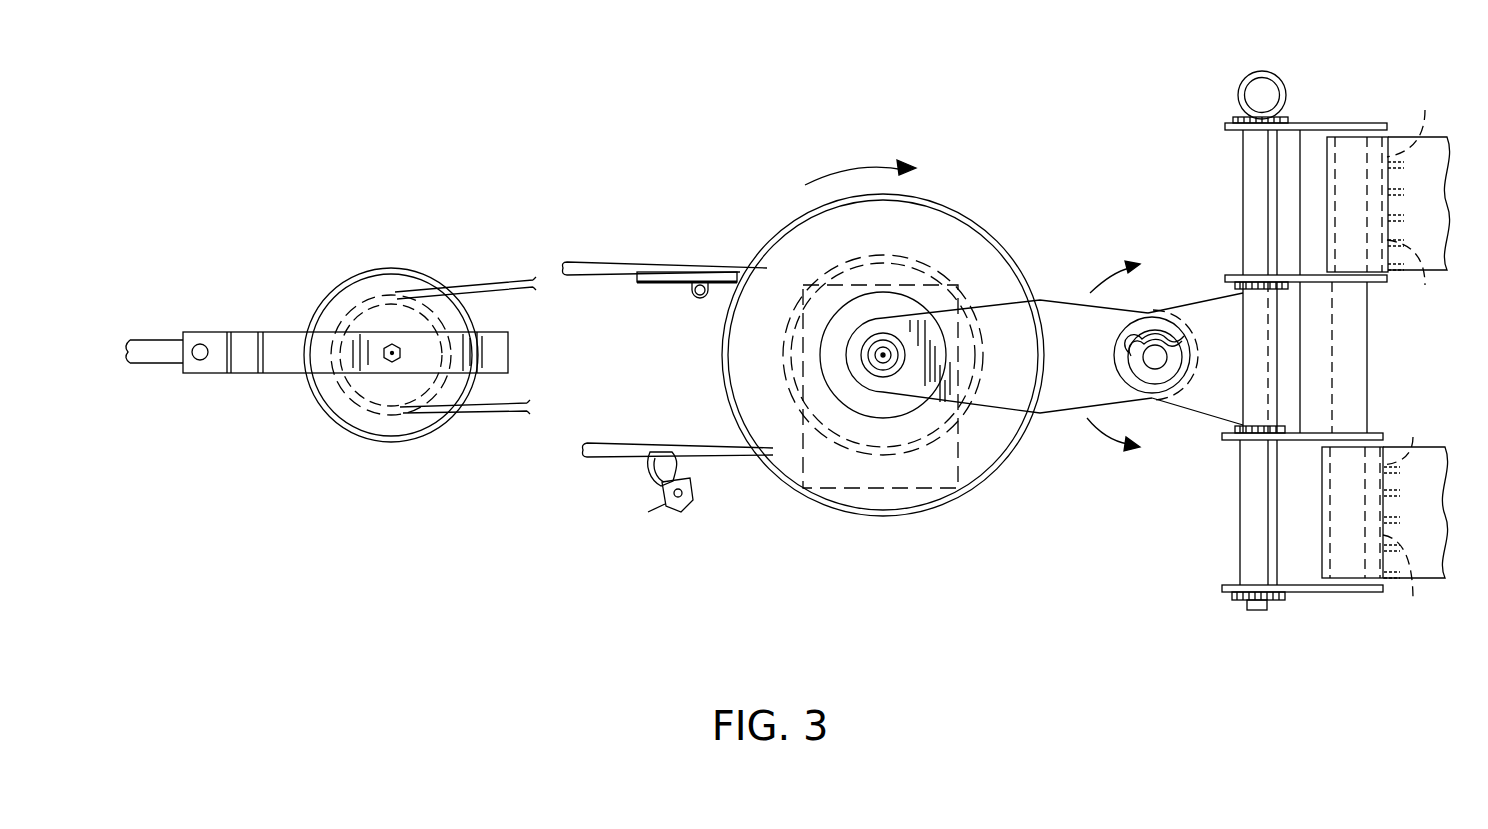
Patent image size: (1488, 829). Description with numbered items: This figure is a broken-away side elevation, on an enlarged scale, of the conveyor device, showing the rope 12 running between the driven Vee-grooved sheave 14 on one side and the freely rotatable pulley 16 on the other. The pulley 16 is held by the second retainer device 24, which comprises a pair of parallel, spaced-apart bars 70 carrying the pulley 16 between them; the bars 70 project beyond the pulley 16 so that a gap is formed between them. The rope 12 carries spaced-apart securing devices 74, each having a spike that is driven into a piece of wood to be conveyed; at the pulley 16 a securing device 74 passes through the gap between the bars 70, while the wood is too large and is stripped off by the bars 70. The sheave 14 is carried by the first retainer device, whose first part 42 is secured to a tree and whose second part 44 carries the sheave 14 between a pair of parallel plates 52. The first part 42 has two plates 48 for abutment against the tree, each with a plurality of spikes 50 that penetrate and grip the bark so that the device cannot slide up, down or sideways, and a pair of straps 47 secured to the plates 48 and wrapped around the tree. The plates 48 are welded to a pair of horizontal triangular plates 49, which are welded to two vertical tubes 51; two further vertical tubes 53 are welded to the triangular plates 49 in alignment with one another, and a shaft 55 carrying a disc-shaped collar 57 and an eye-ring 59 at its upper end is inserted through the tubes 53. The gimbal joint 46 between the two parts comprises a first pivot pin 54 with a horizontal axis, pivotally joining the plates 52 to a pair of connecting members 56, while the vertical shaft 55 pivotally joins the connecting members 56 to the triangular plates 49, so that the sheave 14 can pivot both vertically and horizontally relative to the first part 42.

The rope 12 is at (610, 455).
The sheave 14 is at (965, 215).
The pulley 16 is at (393, 267).
The second retainer device 24 is at (189, 303).
The first part 42 is at (1363, 96).
The second part 44 is at (1061, 282).
The gimbal joint 46 is at (1174, 443).
The straps 47 is at (1440, 175).
The plates 48 is at (1412, 356).
The triangular plates 49 is at (1318, 123).
The spikes 50 is at (1380, 357).
The vertical tubes 51 is at (1355, 362).
The plates 52 is at (1048, 341).
The vertical tubes 53 is at (1253, 184).
The pivot pin 54 is at (1160, 360).
The shaft 55 is at (1258, 612).
The connecting members 56 is at (1215, 303).
The collar 57 is at (1240, 118).
The eye-ring 59 is at (1250, 75).
The bars 70 is at (500, 357).
The securing devices 74 is at (672, 468).